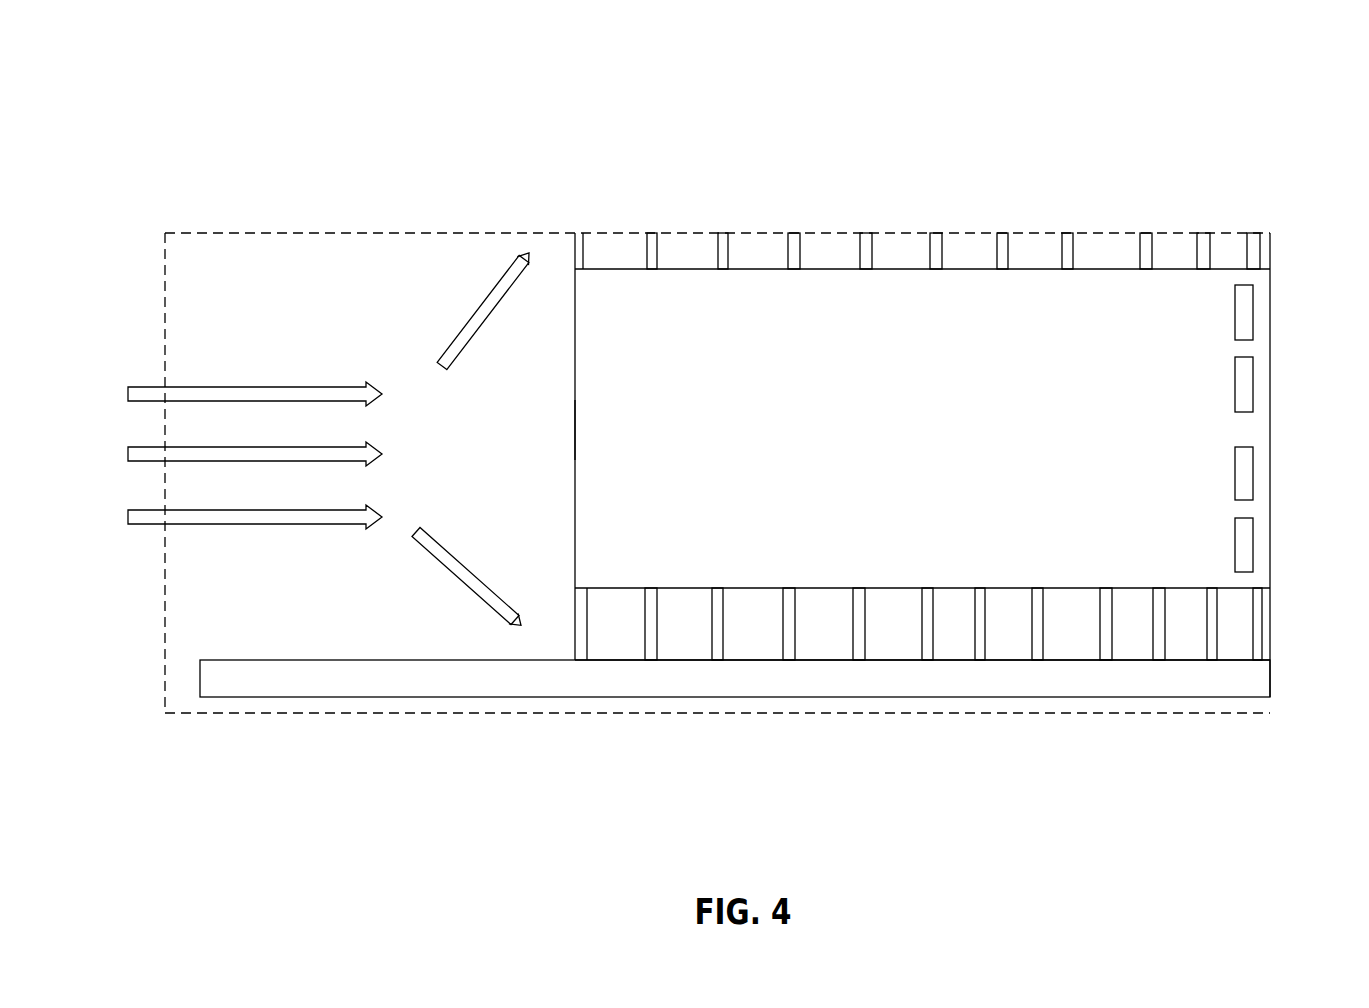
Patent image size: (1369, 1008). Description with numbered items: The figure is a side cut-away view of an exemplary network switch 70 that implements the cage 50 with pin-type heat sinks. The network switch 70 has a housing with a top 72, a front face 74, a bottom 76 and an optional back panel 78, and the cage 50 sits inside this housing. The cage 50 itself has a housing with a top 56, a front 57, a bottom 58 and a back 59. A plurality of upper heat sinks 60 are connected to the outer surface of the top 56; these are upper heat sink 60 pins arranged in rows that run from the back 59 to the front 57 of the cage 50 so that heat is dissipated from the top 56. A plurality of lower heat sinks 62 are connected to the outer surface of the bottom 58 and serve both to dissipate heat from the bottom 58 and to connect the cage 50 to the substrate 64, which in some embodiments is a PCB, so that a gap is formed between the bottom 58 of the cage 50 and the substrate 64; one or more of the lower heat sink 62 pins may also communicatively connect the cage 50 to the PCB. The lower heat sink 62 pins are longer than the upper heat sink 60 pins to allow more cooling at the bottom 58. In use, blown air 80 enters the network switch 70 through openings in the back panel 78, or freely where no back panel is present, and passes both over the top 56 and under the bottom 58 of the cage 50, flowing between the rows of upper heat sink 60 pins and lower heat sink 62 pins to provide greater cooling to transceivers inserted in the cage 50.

The network switch 70 is at (739, 409).
The top 72 is at (505, 233).
The back panel 78 is at (165, 305).
The bottom 76 is at (435, 713).
The blown air 80 is at (468, 343).
The cage 50 is at (605, 390).
The back 59 is at (575, 430).
The front face 74 is at (1270, 243).
The top 56 is at (678, 270).
The upper heat sinks 60 is at (873, 250).
The front 57 is at (1270, 355).
The bottom 58 is at (752, 588).
The lower heat sinks 62 is at (987, 605).
The substrate 64 is at (288, 660).